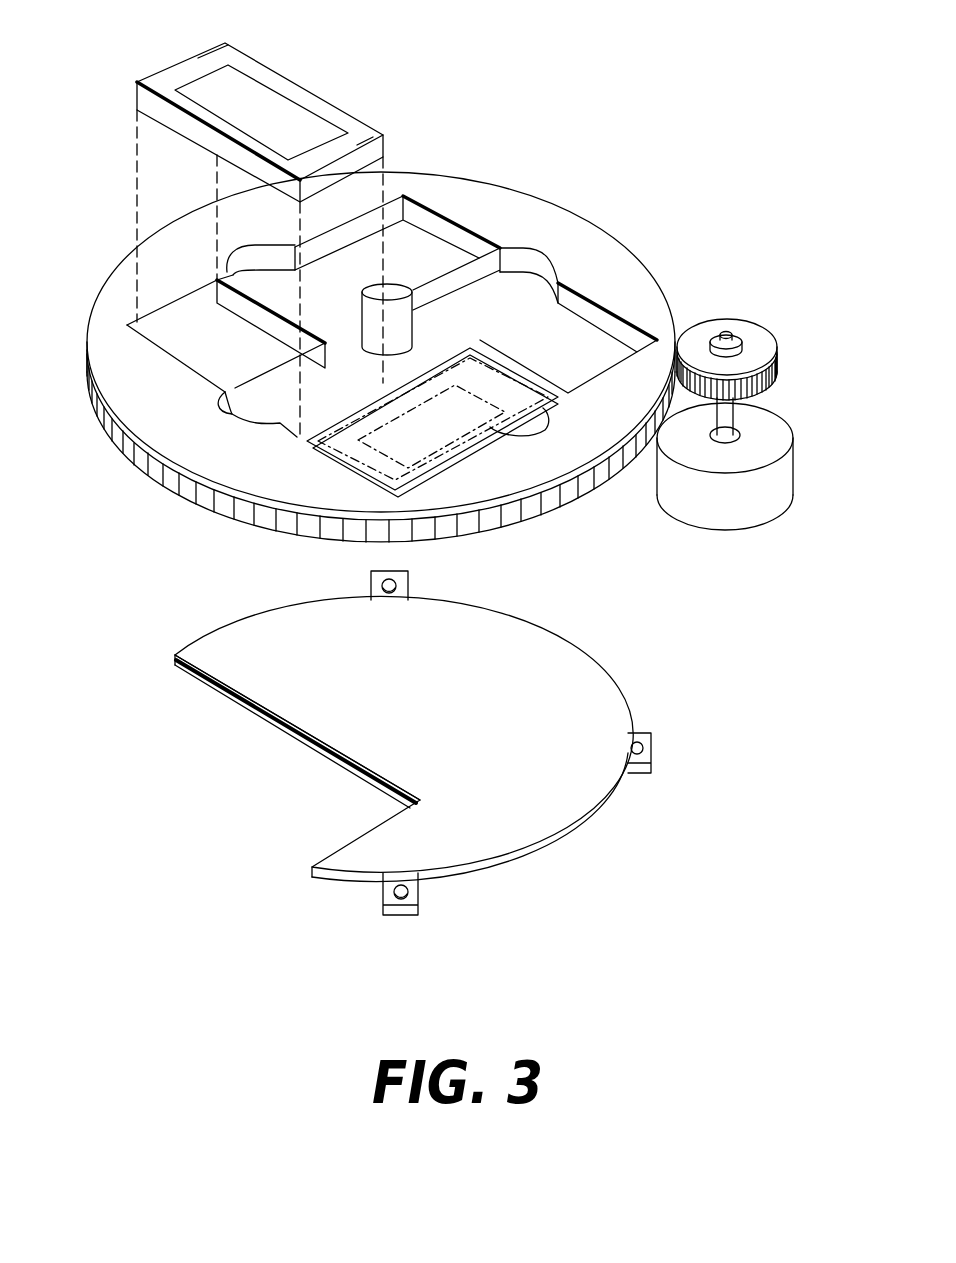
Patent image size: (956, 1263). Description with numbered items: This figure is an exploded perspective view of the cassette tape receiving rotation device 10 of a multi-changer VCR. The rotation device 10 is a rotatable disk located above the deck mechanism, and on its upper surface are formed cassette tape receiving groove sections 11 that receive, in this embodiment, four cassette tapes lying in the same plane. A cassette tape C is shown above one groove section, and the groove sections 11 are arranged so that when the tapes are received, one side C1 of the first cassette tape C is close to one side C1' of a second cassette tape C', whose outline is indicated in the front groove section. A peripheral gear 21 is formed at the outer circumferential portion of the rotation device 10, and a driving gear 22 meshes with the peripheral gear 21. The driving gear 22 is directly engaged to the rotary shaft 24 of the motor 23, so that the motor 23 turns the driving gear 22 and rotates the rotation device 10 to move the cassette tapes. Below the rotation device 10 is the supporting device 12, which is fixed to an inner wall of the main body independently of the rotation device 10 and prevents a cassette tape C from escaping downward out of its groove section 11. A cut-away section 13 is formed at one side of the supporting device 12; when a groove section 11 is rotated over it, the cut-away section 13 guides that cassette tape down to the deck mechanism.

The cassette tape receiving rotation device 10 is at (520, 193).
The cassette tape receiving groove sections 11 is at (185, 340).
The supporting device 12 is at (523, 863).
The cut-away section 13 is at (287, 748).
The peripheral gear 21 is at (603, 492).
The driving gear 22 is at (778, 347).
The motor 23 is at (780, 487).
The rotary shaft 24 is at (730, 415).
The cassette tape C is at (245, 224).
The one side of first cassette tape C1 is at (300, 233).
The one side of second cassette tape C1' is at (396, 422).
The second cassette tape C' is at (433, 428).